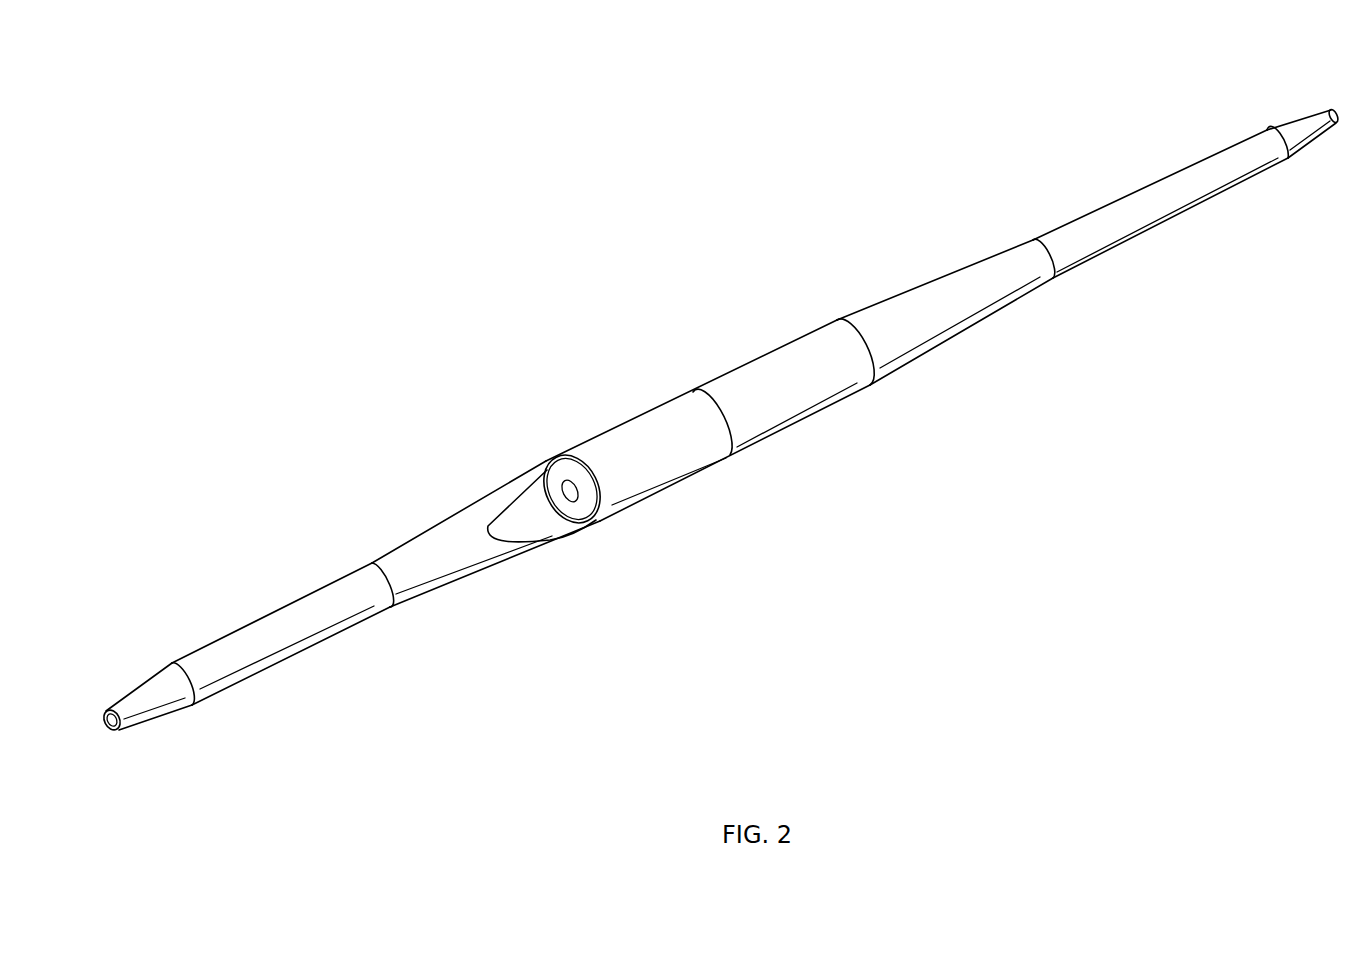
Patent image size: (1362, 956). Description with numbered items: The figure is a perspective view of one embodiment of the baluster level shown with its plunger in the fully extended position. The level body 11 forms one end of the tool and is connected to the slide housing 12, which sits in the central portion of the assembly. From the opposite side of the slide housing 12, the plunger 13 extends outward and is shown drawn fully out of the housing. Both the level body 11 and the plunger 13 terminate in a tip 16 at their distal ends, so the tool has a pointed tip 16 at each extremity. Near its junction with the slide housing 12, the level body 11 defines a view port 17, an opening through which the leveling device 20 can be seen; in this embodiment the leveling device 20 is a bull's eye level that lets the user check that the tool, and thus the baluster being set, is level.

The level body 11 is at (347, 625).
The slide housing 12 is at (790, 342).
The plunger 13 is at (1148, 197).
The tip 16 is at (77, 738).
The view port 17 is at (538, 512).
The leveling device 20 is at (562, 488).